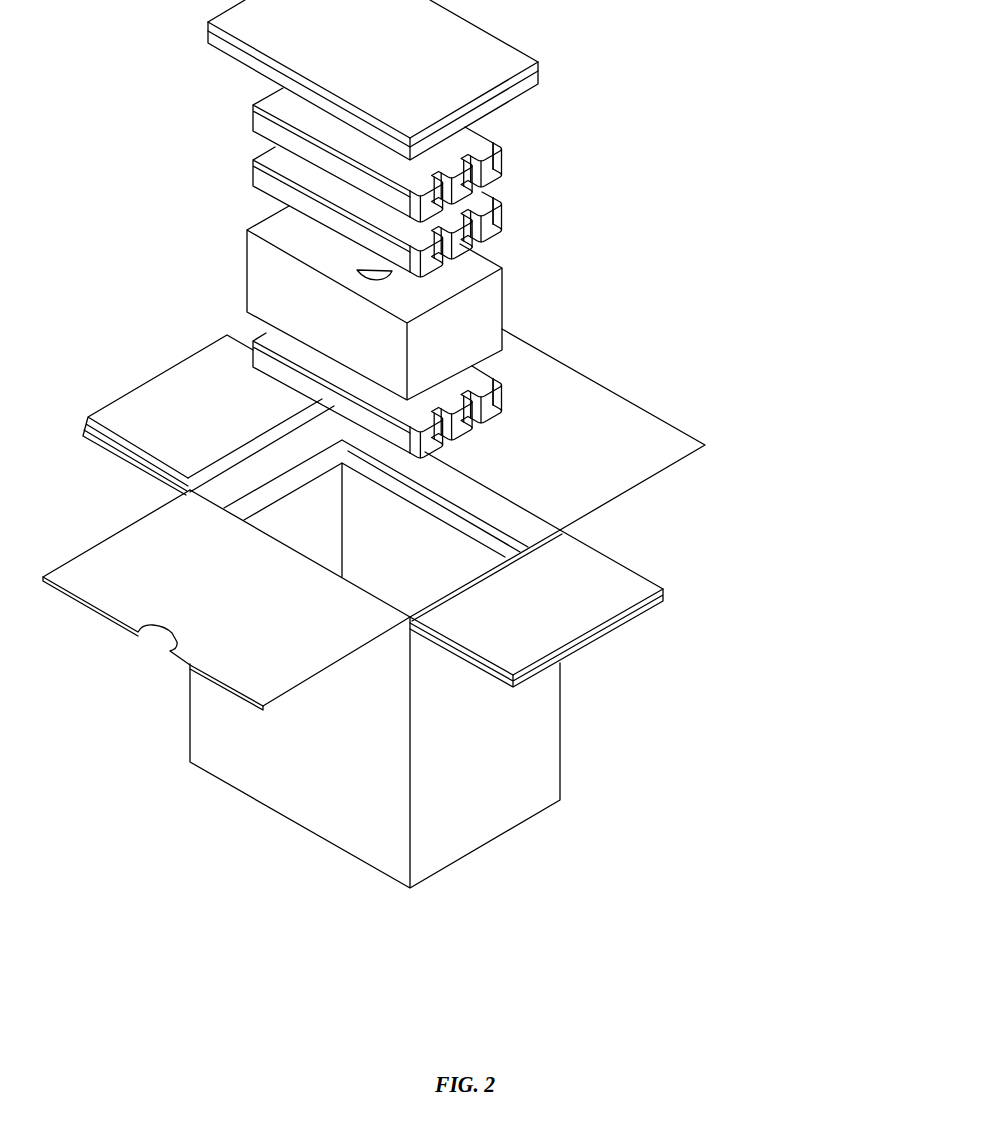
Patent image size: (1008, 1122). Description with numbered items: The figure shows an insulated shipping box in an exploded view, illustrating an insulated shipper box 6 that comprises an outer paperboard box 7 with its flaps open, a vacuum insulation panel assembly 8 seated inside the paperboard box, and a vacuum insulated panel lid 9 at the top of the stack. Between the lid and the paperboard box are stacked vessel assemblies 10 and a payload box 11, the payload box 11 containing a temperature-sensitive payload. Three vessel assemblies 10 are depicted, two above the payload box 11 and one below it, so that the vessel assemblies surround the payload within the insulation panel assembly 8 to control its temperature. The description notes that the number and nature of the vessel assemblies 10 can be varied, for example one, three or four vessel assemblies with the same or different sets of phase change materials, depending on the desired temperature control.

The insulated shipper box 6 is at (680, 653).
The outer paperboard box 7 is at (561, 770).
The vacuum insulation panel assembly 8 is at (428, 543).
The vacuum insulated panel lid 9 is at (538, 76).
The vessel assembly 10 is at (497, 210).
The payload box 11 is at (485, 297).